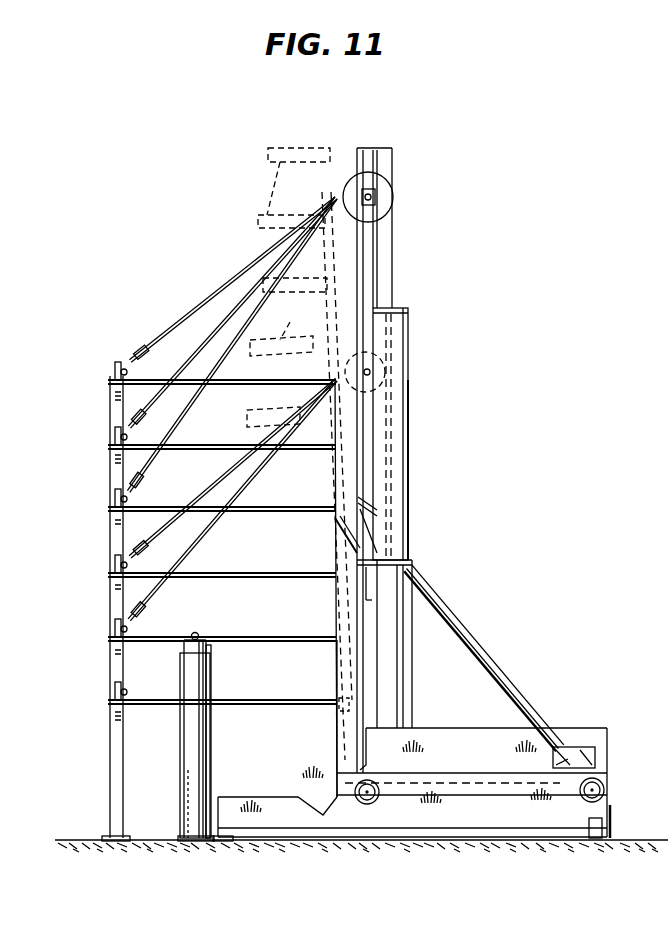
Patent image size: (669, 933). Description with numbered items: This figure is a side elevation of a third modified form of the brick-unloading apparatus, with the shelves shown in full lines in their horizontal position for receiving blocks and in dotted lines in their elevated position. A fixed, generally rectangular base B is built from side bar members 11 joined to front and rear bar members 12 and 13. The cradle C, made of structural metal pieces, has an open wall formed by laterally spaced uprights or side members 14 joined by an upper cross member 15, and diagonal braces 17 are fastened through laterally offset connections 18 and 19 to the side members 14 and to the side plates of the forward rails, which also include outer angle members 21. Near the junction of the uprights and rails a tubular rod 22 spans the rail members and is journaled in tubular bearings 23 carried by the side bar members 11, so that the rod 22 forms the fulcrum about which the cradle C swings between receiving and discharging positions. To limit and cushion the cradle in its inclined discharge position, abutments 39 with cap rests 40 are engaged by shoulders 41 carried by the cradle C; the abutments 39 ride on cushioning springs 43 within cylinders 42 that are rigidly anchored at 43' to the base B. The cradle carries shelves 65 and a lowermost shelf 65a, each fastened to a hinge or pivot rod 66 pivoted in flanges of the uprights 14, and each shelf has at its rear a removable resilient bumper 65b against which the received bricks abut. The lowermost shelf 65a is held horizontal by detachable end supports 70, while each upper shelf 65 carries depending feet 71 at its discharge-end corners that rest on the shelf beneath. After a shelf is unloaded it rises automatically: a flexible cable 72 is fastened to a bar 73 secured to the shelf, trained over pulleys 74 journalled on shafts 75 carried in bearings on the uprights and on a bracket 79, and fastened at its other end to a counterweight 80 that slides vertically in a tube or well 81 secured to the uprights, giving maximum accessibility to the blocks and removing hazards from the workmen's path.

The side bar members 11 is at (433, 815).
The front bar member 12 is at (604, 840).
The rear bar member 13 is at (229, 842).
The side members 14 is at (360, 682).
The upper cross member 15 is at (343, 152).
The diagonal braces 17 is at (517, 693).
The laterally offset connection 18 is at (402, 574).
The laterally offset connection 19 is at (580, 762).
The outer angle members 21 is at (476, 783).
The tubular rod 22 is at (372, 795).
The tubular bearings 23 is at (358, 808).
The abutments 39 is at (212, 647).
The cap rests 40 is at (200, 636).
The shoulders 41 is at (335, 536).
The cylinders 42 is at (205, 748).
The cushioning springs 43 is at (162, 804).
The anchorage 43' is at (177, 865).
The shelves 65 is at (235, 382).
The lowermost shelf 65a is at (300, 700).
The removable bumper 65b is at (128, 498).
The hinge rod 66 is at (333, 712).
The end supports 70 is at (118, 766).
The depending feet 71 is at (270, 166).
The flexible cable 72 is at (247, 318).
The bar 73 is at (118, 367).
The pulleys 74 is at (388, 199).
The shafts 75 is at (373, 195).
The bracket 79 is at (372, 257).
The counterweights 80 is at (415, 503).
The tubes or wells 81 is at (396, 344).
The base B is at (500, 861).
The cradle C is at (420, 608).